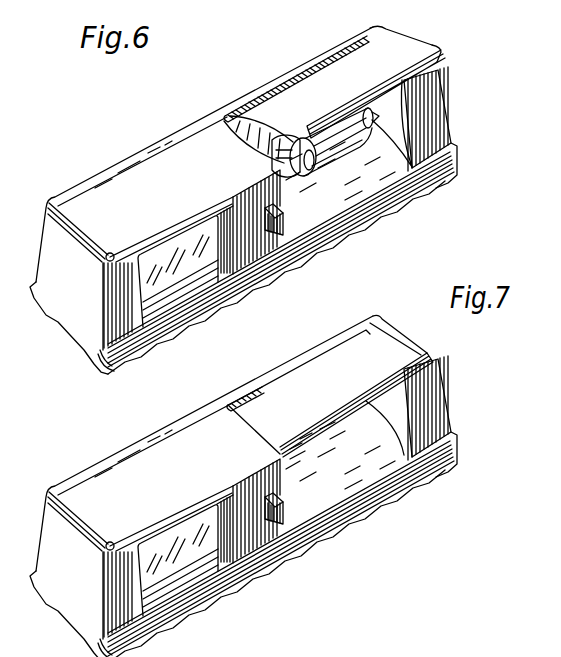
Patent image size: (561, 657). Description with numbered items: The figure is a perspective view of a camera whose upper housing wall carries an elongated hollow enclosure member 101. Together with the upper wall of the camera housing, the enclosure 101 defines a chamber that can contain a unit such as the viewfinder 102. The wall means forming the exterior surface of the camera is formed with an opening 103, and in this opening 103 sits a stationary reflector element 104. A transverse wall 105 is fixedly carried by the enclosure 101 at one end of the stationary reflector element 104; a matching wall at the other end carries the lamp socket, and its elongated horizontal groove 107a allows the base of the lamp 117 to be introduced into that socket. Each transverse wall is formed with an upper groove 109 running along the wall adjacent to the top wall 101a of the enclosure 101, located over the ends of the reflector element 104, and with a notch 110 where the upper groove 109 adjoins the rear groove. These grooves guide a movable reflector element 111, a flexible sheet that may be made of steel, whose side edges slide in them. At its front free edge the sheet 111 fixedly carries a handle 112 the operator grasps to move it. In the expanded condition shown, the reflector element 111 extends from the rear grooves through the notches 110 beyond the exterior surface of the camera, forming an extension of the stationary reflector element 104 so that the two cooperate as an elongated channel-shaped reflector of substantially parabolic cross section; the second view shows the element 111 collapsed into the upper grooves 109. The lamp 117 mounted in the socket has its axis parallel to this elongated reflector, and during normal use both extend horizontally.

In FIG. 6, the enclosure member 101 is at (152, 141).
In FIG. 7, the enclosure member 101 is at (201, 486).
In FIG. 6, the top wall of the enclosure 101a is at (198, 137).
In FIG. 7, the top wall of the enclosure 101a is at (133, 453).
In FIG. 6, the viewfinder 102 is at (190, 262).
In FIG. 7, the viewfinder 102 is at (189, 571).
In FIG. 6, the opening 103 is at (413, 115).
In FIG. 7, the opening 103 is at (444, 416).
In FIG. 6, the stationary reflector element 104 is at (360, 182).
In FIG. 7, the stationary reflector element 104 is at (281, 539).
In FIG. 6, the transverse wall 105 is at (397, 110).
In FIG. 7, the transverse wall 105 is at (414, 402).
In FIG. 6, the elongated horizontal groove 107a is at (270, 218).
In FIG. 7, the elongated horizontal groove 107a is at (274, 508).
In FIG. 6, the upper groove 109 is at (423, 72).
In FIG. 6, the notch 110 is at (227, 115).
In FIG. 7, the notch 110 is at (244, 379).
In FIG. 6, the movable reflector element 111 is at (390, 48).
In FIG. 7, the movable reflector element 111 is at (327, 376).
In FIG. 6, the handle 112 is at (428, 52).
In FIG. 7, the handle 112 is at (356, 369).
In FIG. 6, the lamp 117 is at (358, 147).